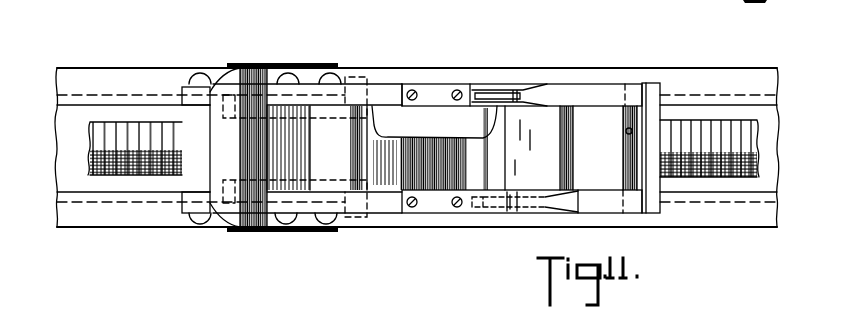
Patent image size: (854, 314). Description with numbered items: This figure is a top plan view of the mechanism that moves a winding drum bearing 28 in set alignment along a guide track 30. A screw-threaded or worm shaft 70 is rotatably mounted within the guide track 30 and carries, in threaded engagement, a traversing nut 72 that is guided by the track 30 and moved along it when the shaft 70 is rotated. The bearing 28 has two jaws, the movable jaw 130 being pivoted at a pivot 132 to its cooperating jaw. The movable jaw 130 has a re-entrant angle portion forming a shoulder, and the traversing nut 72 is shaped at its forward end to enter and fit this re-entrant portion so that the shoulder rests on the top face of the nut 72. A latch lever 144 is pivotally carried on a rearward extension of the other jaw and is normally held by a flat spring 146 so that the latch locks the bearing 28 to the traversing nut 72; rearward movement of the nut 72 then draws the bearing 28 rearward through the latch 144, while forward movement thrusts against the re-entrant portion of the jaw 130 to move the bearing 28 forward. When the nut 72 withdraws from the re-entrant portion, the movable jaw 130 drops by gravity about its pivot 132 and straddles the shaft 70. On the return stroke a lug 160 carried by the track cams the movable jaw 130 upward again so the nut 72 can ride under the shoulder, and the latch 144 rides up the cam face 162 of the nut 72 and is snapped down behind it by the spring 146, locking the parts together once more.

The guide track 30 is at (123, 78).
The screw-threaded shaft 70 is at (133, 177).
The pivot 132 is at (215, 195).
The bearing 28 is at (308, 208).
The lug 160 is at (312, 115).
The movable jaw 130 is at (440, 172).
The traversing nut 72 is at (483, 118).
The latch lever 144 is at (600, 90).
The flat spring 146 is at (547, 205).
The cam face 162 is at (626, 132).